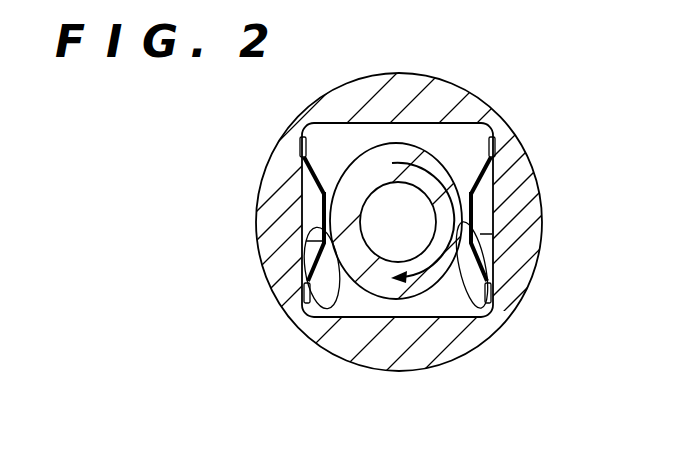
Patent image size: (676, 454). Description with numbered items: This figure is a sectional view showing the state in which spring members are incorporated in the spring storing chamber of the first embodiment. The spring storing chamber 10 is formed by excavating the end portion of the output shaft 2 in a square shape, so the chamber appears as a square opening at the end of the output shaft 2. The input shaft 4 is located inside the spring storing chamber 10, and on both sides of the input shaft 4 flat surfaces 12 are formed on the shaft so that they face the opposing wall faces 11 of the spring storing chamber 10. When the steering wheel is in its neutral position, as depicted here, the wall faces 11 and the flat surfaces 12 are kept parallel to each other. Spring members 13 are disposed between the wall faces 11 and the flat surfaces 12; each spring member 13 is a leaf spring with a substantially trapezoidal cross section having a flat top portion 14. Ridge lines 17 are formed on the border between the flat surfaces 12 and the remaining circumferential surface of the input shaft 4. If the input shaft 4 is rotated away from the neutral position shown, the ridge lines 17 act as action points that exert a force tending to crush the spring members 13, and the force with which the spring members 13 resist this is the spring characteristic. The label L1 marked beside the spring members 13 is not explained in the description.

The output shaft 2 is at (418, 358).
The input shaft 4 is at (400, 155).
The spring storing chamber 10 is at (357, 308).
The wall faces 11 is at (306, 213).
The flat surfaces 12 is at (317, 307).
The spring members 13 is at (320, 165).
The flat top portion 14 is at (312, 242).
The ridge lines 17 is at (327, 190).
The length L1 is at (305, 276).